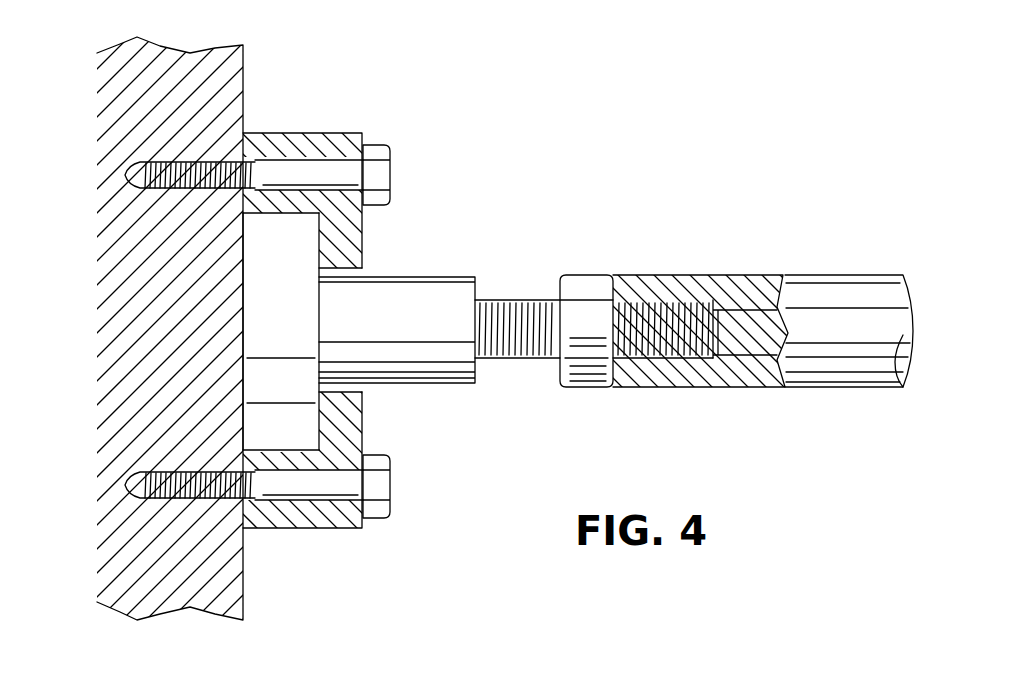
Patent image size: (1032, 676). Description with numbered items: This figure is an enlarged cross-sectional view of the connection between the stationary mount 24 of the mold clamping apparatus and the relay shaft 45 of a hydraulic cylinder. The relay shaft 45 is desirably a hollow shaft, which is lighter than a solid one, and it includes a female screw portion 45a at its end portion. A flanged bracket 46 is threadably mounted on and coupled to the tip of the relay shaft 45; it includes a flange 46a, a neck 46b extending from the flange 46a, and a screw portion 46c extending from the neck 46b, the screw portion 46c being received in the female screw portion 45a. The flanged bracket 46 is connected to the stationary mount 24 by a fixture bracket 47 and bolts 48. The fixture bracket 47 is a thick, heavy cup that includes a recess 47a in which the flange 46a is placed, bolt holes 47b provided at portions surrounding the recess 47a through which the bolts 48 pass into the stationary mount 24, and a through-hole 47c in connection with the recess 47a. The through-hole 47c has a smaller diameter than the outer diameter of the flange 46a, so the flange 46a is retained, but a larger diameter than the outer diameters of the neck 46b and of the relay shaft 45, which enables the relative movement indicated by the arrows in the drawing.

The stationary mount 24 is at (175, 370).
The relay shaft 45 is at (763, 331).
The female screw portion 45a is at (672, 308).
The flanged bracket 46 is at (430, 403).
The flange 46a is at (278, 422).
The neck 46b is at (428, 365).
The screw portion 46c is at (518, 360).
The fixture bracket 47 is at (228, 323).
The recess 47a is at (282, 213).
The bolt holes 47b is at (286, 154).
The through-hole 47c is at (350, 280).
The bolts 48 is at (382, 175).